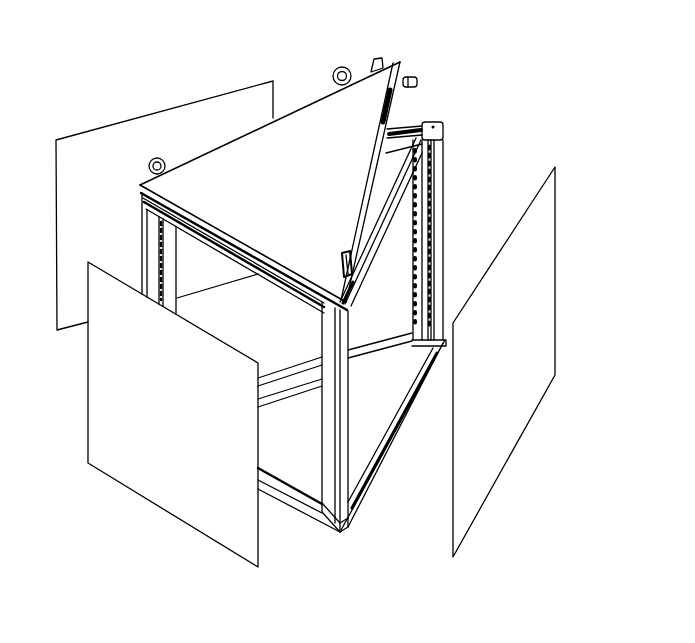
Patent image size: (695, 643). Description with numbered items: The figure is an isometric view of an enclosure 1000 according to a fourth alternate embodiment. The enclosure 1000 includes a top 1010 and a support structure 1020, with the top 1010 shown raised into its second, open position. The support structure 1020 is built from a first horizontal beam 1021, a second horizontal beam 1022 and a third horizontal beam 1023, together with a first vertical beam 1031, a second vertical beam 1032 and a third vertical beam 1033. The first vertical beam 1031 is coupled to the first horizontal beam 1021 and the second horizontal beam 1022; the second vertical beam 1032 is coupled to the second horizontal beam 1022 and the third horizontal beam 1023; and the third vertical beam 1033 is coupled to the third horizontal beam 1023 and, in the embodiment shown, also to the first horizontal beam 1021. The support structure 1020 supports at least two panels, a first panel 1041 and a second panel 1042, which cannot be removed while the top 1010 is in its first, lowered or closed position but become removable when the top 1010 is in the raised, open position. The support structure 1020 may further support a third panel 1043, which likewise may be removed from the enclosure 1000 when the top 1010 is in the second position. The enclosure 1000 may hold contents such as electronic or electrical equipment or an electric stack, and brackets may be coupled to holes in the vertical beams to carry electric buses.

The enclosure 1000 is at (147, 68).
The top 1010 is at (310, 107).
The support structure 1020 is at (499, 131).
The first horizontal beam 1021 is at (380, 237).
The second horizontal beam 1022 is at (214, 243).
The third horizontal beam 1023 is at (402, 128).
The first vertical beam 1031 is at (328, 480).
The second vertical beam 1032 is at (148, 228).
The third vertical beam 1033 is at (437, 192).
The first panel 1041 is at (538, 310).
The second panel 1042 is at (105, 140).
The third panel 1043 is at (97, 425).